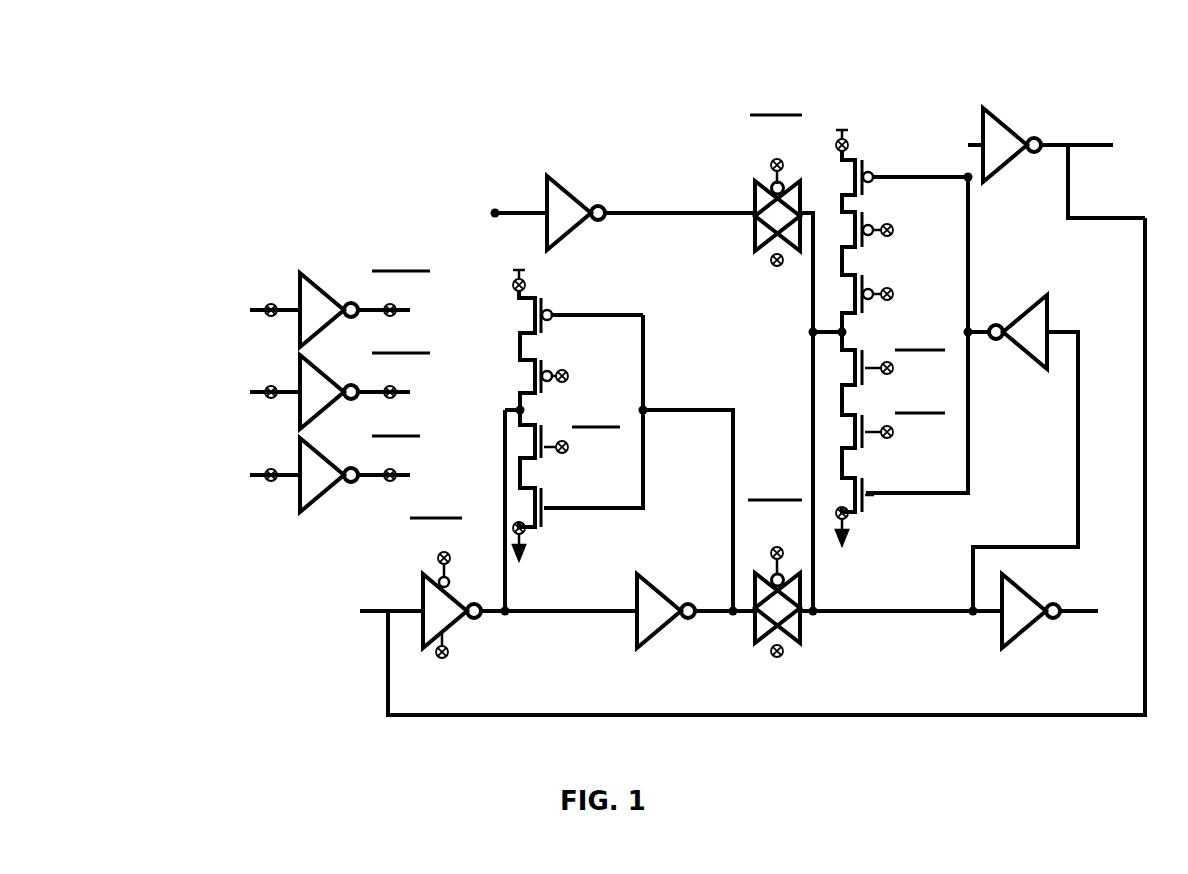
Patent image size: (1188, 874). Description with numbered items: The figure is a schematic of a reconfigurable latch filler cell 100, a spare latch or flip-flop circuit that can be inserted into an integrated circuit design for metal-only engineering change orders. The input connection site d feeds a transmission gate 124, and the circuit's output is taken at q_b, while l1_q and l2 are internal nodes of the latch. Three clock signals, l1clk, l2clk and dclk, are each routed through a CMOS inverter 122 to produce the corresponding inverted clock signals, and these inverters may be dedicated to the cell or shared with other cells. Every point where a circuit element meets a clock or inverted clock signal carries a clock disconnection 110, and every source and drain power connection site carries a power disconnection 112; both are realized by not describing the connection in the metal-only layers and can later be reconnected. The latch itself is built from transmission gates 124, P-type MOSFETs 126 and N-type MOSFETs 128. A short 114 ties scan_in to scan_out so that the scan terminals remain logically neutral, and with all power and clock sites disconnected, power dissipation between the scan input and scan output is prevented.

The reconfigurable latch filler cell 100 is at (490, 99).
The clock disconnection 110 is at (265, 315).
The power disconnection 112 is at (512, 280).
The short 114 is at (548, 713).
The CMOS inverter 122 is at (321, 470).
The transmission gate 124 is at (756, 185).
The P-type MOSFET 126 is at (545, 302).
The N-type MOSFET 128 is at (866, 490).